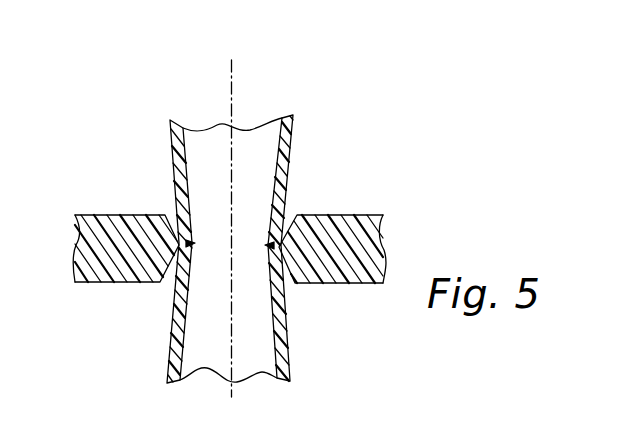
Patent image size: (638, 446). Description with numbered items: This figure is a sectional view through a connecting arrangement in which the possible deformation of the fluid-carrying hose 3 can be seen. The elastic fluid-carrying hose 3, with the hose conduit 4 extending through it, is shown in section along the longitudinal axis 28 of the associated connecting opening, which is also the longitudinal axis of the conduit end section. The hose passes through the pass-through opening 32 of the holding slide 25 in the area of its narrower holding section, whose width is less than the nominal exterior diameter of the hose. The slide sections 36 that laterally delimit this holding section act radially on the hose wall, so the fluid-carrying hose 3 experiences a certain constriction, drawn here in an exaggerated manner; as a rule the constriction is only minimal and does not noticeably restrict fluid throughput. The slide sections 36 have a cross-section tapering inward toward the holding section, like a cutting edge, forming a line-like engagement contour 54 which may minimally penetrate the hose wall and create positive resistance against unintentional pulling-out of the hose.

The fluid-carrying hose 3 is at (175, 140).
The hose conduit 4 is at (223, 153).
The holding slide 25 is at (357, 225).
The longitudinal axis 28 is at (233, 72).
The pass-through opening 32 is at (280, 267).
The slide sections 36 is at (148, 283).
The line-like engagement contour 54 is at (195, 243).